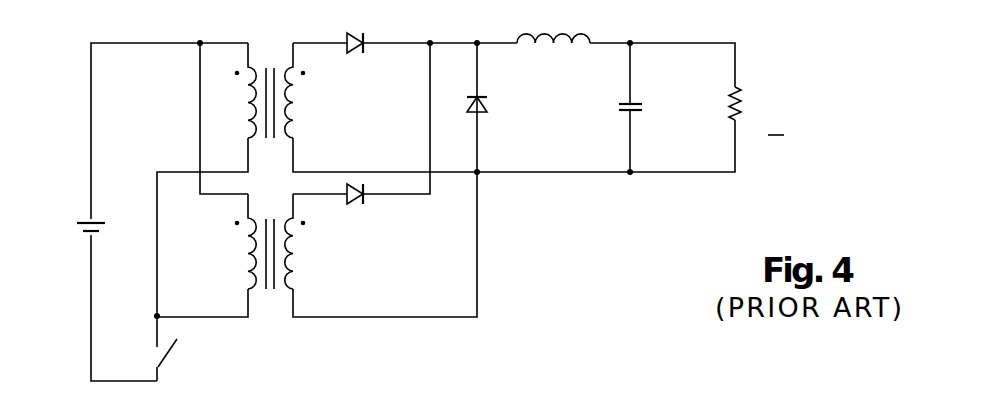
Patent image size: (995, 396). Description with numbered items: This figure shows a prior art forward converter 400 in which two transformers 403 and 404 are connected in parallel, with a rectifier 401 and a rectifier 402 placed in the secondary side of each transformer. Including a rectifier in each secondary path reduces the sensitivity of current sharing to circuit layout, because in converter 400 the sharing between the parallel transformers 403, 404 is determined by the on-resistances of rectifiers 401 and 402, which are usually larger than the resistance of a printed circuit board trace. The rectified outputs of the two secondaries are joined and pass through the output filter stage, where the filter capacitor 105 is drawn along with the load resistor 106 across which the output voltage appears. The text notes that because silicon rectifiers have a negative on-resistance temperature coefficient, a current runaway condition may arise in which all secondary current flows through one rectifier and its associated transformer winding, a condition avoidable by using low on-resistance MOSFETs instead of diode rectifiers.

The forward converter 400 is at (622, 274).
The rectifier 401 is at (363, 42).
The rectifier 402 is at (365, 200).
The transformer 403 is at (327, 107).
The transformer 404 is at (325, 244).
The output filter capacitor CF 105 is at (635, 106).
The load resistor RL 106 is at (738, 118).